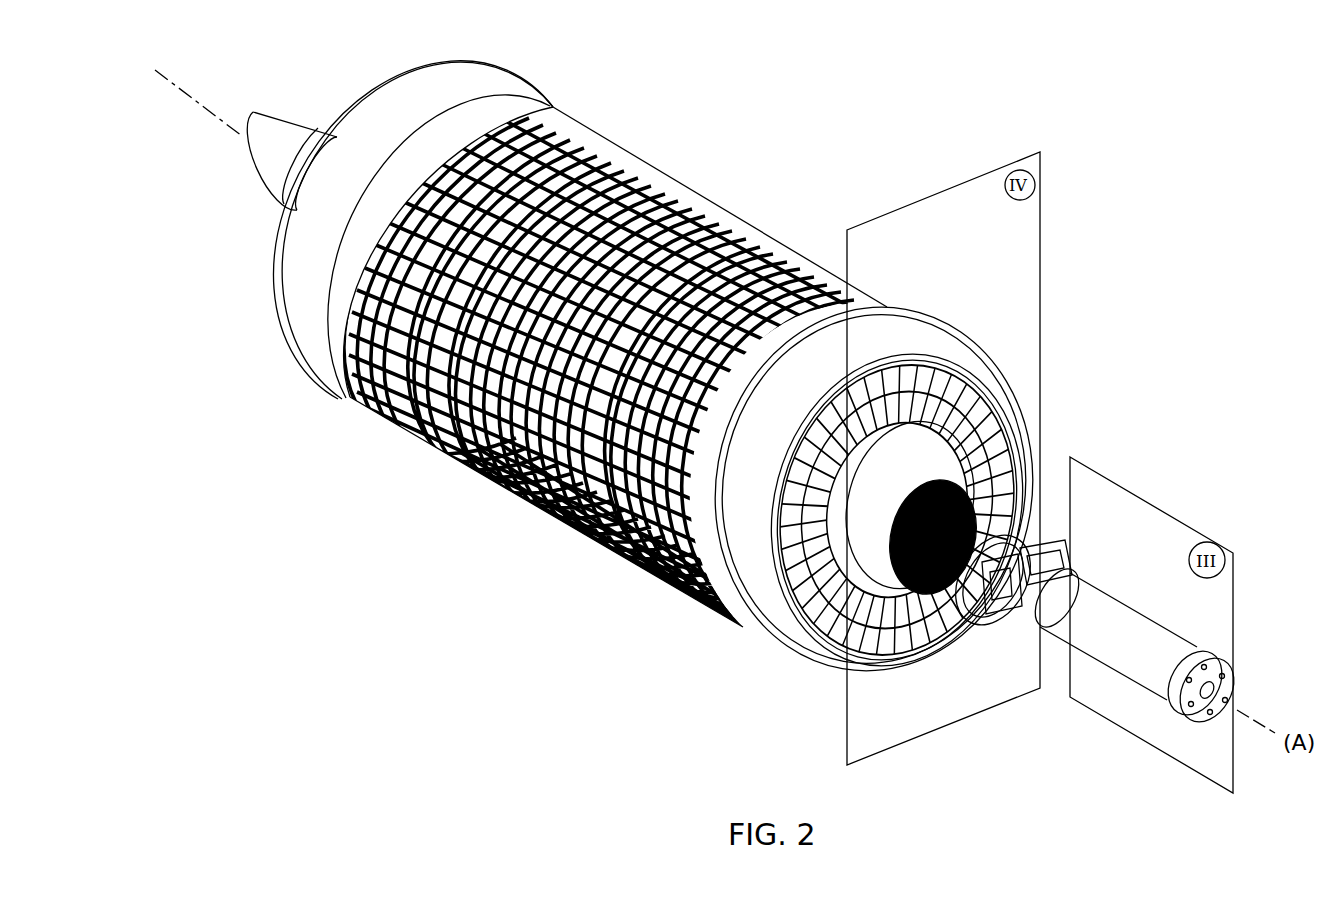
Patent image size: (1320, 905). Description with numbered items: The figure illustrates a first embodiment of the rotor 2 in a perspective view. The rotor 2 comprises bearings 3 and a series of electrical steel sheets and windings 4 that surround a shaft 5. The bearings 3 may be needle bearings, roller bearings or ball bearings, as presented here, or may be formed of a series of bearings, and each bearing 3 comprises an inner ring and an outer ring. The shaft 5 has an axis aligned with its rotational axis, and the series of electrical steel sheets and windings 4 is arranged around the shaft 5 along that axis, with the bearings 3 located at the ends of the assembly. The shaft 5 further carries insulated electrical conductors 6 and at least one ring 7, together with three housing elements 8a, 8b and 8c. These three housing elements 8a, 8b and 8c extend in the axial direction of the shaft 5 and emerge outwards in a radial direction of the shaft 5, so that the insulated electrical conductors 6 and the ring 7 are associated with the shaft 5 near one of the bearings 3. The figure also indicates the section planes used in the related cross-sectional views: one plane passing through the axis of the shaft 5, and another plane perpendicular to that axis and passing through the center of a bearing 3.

The rotor 2 is at (577, 104).
The bearings 3 is at (285, 222).
The electrical steel sheets and windings 4 is at (526, 511).
The shaft 5 is at (1152, 690).
The insulated electrical conductors 6 is at (1043, 550).
The ring 7 is at (1003, 497).
The housing element 8a is at (957, 596).
The housing element 8b is at (976, 600).
The housing element 8c is at (1005, 503).